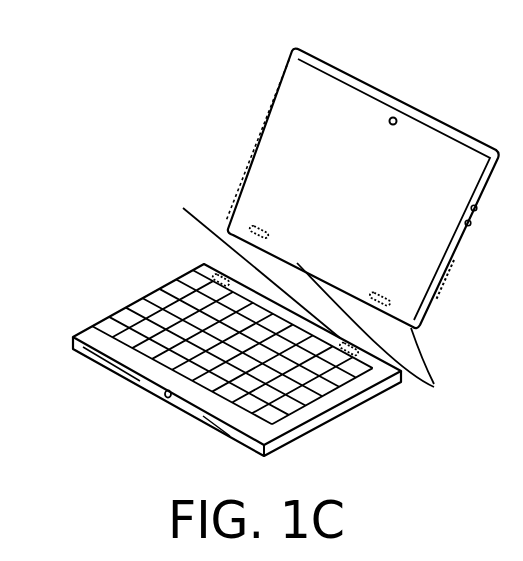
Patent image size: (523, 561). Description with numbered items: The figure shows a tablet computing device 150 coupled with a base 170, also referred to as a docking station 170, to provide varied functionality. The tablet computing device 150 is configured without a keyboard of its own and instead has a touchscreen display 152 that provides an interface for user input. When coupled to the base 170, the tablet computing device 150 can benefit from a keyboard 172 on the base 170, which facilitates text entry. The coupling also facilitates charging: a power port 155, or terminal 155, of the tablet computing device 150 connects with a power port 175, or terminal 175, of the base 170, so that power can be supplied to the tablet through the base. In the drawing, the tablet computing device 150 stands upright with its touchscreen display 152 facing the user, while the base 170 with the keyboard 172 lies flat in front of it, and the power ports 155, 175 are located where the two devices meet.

The tablet computing device 150 is at (267, 101).
The touchscreen display 152 is at (326, 101).
The power port 155 is at (384, 332).
The base 170 is at (142, 290).
The keyboard 172 is at (188, 298).
The power port 175 is at (205, 306).